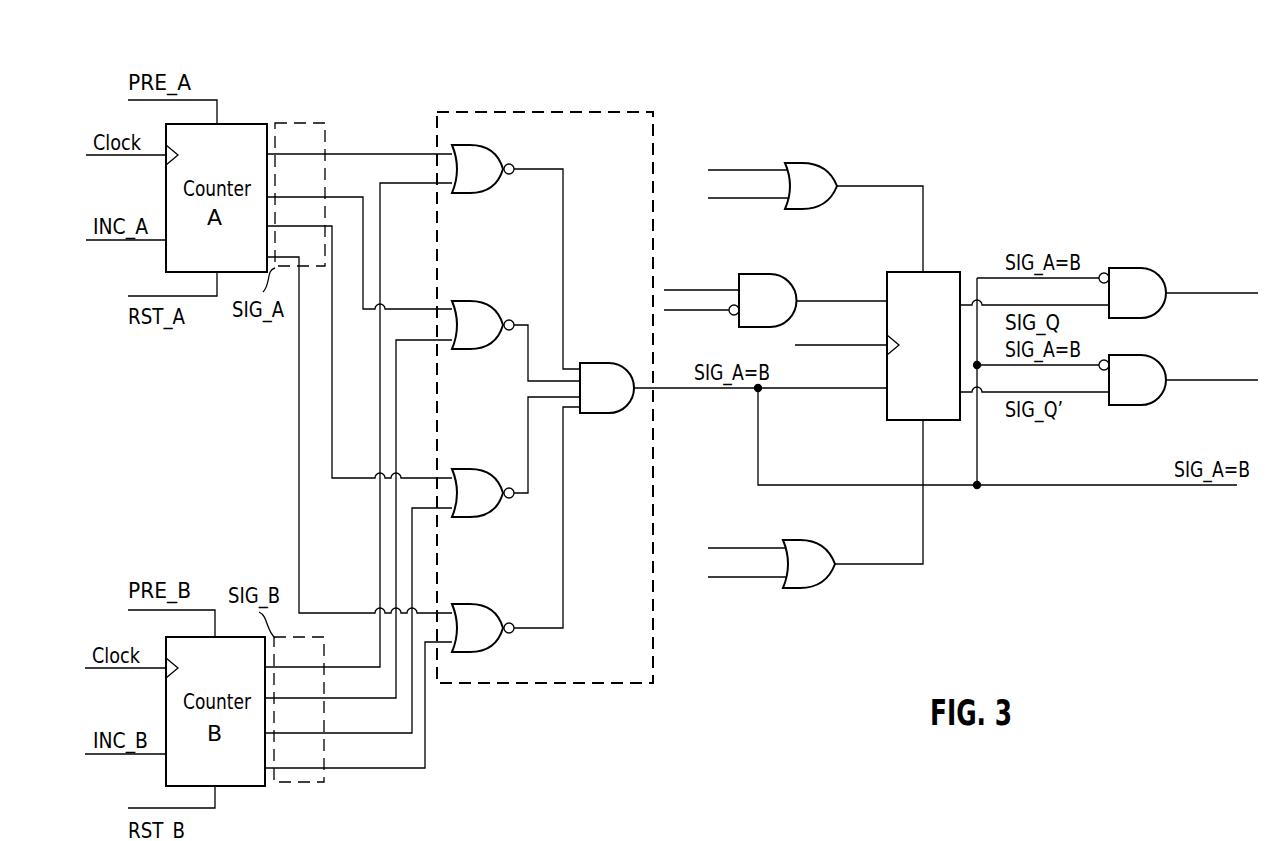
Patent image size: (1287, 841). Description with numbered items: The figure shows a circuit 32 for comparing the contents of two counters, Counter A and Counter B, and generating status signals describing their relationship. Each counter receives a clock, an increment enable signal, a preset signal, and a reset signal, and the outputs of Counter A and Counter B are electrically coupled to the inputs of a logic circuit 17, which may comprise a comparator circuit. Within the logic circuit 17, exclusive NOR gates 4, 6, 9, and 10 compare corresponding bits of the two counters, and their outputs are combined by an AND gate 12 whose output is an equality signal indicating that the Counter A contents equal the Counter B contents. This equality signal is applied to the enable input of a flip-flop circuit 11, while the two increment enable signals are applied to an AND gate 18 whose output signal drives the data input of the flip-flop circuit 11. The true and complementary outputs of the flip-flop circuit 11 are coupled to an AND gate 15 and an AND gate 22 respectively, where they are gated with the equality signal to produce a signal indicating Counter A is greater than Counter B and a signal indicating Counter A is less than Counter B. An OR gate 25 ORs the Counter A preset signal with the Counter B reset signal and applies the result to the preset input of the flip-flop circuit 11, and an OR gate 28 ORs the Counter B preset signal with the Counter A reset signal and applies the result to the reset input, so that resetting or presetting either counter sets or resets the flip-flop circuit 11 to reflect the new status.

The exclusive NOR gate 4 is at (481, 179).
The exclusive NOR gate 6 is at (481, 335).
The exclusive NOR gate 9 is at (481, 503).
The exclusive NOR gate 10 is at (486, 638).
The flip-flop circuit 11 is at (937, 355).
The AND gate 12 is at (612, 398).
The AND gate 15 is at (1143, 303).
The logic circuit 17 is at (590, 112).
The AND gate 18 is at (770, 311).
The AND gate 22 is at (1143, 390).
The OR gate 25 is at (822, 196).
The OR gate 28 is at (822, 574).
The circuit 32 is at (380, 121).